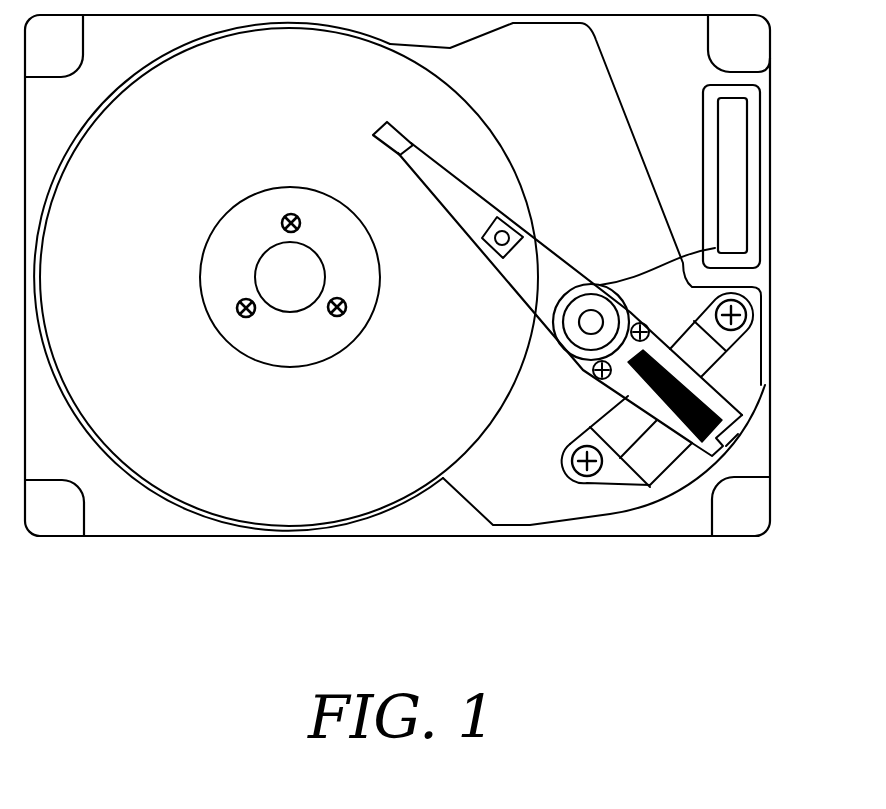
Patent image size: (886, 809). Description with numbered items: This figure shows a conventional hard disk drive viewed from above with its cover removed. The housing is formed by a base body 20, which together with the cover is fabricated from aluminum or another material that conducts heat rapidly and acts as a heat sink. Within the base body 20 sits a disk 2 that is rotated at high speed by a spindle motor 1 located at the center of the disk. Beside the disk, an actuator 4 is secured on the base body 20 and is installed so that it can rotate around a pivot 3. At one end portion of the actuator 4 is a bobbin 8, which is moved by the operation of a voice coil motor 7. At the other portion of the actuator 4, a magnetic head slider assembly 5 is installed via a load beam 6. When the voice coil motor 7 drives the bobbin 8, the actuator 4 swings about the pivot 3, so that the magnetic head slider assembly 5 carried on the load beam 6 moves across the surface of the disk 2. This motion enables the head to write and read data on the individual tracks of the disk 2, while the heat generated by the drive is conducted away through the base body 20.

The spindle motor 1 is at (280, 290).
The disk 2 is at (280, 109).
The pivot 3 is at (588, 298).
The actuator 4 is at (548, 289).
The magnetic head slider assembly 5 is at (392, 140).
The load beam 6 is at (443, 190).
The voice coil motor 7 is at (657, 460).
The bobbin 8 is at (623, 387).
The base body 20 is at (762, 262).